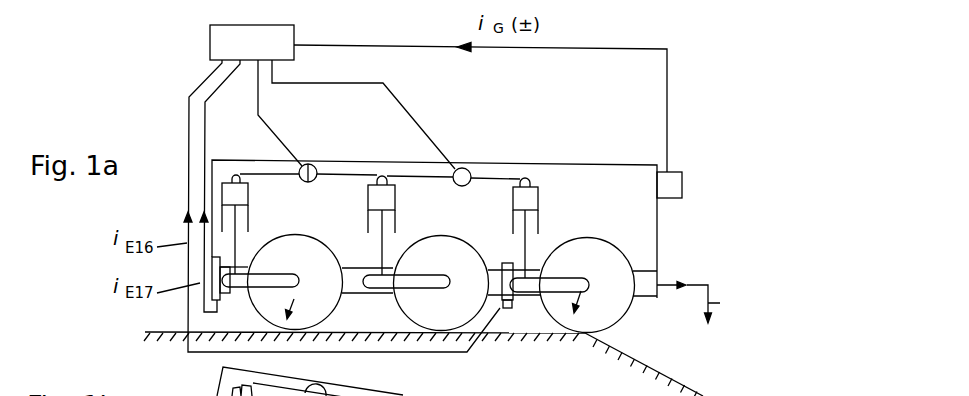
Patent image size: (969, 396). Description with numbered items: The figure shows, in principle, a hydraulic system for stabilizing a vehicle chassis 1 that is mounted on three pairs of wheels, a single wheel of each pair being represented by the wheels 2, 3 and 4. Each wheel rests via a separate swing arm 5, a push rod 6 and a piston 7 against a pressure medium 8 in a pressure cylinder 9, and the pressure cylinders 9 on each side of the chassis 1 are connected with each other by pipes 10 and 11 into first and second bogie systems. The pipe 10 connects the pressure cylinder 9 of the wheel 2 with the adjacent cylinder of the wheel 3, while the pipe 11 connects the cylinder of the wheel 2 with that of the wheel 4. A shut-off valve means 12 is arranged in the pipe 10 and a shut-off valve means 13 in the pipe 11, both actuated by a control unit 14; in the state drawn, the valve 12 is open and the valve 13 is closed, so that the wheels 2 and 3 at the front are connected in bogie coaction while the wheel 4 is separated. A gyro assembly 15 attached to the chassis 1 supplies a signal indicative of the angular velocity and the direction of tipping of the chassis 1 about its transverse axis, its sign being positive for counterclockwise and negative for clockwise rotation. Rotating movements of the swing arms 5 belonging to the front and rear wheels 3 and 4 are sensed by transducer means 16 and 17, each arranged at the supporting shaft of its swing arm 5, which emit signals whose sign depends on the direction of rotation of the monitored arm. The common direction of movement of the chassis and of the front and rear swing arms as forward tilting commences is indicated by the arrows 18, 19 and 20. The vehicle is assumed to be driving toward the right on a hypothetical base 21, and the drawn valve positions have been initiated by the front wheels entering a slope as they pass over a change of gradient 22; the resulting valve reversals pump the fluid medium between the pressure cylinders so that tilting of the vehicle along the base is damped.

The vehicle chassis 1 is at (657, 268).
The wheel 2 is at (453, 245).
The wheel 3 is at (607, 252).
The wheel 4 is at (303, 245).
The swing arm 5 is at (543, 285).
The push rod 6 is at (526, 260).
The piston 7 is at (513, 220).
The pressure medium 8 is at (535, 186).
The pressure cylinder 9 is at (542, 198).
The pipe 10 is at (428, 176).
The pipe 11 is at (349, 174).
The shut-off valve means 12 is at (468, 168).
The shut-off valve means 13 is at (308, 164).
The control unit 14 is at (210, 35).
The gyro assembly 15 is at (682, 187).
The transducer means 16 is at (509, 302).
The transducer means 17 is at (217, 298).
The arrow 18 is at (699, 303).
The arrow 19 is at (591, 303).
The arrow 20 is at (295, 300).
The hypothetical base 21 is at (523, 380).
The change of gradient 22 is at (583, 340).